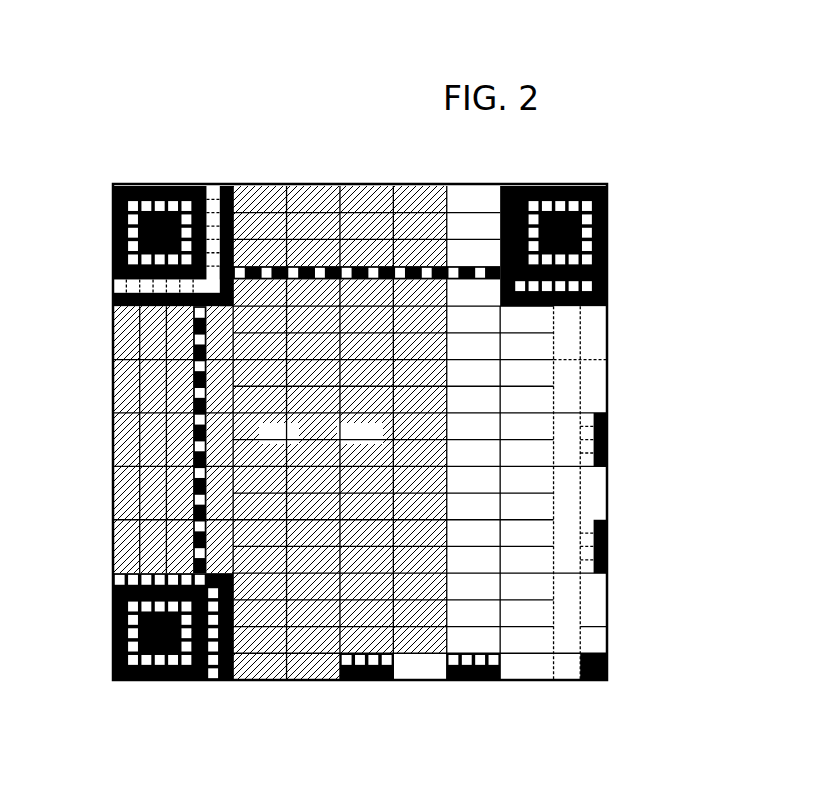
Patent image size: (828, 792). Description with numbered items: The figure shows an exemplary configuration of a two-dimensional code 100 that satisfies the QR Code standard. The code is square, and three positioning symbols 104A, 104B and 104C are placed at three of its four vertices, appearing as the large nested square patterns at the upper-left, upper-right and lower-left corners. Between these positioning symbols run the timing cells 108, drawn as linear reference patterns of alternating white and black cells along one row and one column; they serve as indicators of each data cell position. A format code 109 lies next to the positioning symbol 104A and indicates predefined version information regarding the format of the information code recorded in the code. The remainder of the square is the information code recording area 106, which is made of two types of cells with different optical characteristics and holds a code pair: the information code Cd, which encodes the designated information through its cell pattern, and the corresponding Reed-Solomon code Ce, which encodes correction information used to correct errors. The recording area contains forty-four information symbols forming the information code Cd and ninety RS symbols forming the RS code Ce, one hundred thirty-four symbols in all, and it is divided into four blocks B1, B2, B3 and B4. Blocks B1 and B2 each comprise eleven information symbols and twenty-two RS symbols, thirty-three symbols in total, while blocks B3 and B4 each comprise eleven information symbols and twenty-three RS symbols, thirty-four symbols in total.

The two-dimensional code 100 is at (361, 427).
The positioning symbol 104A is at (168, 184).
The positioning symbol 104B is at (565, 184).
The positioning symbol 104C is at (153, 682).
The information code recording area 106 is at (379, 441).
The timing cells 108 is at (370, 266).
The format code 109 is at (234, 184).
The RS code Ce is at (296, 441).
The information code Cd is at (514, 441).
The block B1 is at (606, 339).
The block B2 is at (606, 610).
The block B3 is at (633, 487).
The block B4 is at (633, 380).